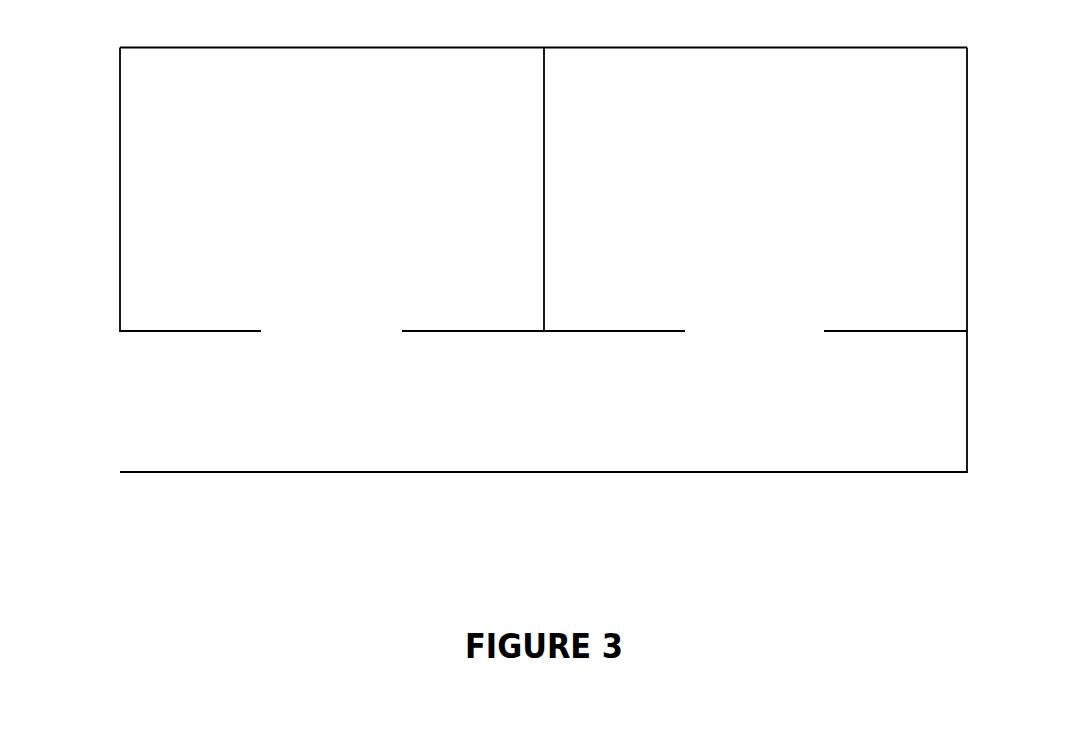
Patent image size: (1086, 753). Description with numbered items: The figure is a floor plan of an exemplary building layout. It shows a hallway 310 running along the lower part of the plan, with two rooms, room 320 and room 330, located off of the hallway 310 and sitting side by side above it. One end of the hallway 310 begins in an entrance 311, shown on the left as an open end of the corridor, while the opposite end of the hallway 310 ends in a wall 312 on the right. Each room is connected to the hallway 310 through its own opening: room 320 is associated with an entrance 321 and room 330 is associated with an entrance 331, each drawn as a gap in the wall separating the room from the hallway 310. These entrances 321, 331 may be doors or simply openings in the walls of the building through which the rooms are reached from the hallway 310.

The hallway 310 is at (545, 430).
The entrance 311 is at (120, 403).
The wall 312 is at (967, 402).
The room 320 is at (332, 190).
The entrance 321 is at (333, 332).
The room 330 is at (832, 190).
The entrance 331 is at (756, 332).